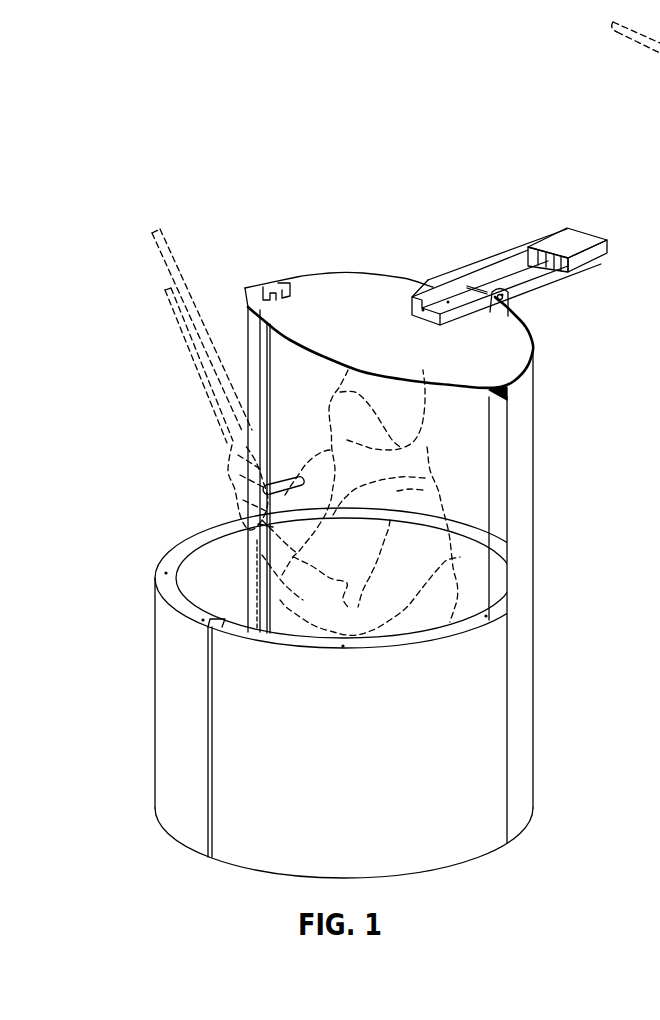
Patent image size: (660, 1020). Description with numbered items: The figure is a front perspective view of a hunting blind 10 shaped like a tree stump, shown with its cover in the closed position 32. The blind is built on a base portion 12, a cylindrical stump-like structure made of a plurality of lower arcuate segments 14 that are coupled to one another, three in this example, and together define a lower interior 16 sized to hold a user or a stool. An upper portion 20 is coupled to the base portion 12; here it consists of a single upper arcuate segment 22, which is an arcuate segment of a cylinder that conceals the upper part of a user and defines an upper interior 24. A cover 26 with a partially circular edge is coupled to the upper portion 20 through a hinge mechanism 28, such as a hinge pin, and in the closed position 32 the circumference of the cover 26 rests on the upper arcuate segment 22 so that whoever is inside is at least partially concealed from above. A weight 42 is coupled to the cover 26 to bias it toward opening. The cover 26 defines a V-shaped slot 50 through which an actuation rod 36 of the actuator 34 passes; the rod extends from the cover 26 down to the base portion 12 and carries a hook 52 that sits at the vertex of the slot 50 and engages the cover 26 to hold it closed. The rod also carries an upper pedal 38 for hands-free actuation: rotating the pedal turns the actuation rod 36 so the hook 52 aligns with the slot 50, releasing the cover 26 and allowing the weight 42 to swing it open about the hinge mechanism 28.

The hunting blind 10 is at (323, 193).
The base portion 12 is at (443, 812).
The lower arcuate segments 14 is at (243, 780).
The lower interior 16 is at (190, 557).
The upper portion 20 is at (522, 409).
The upper arcuate segment 22 is at (522, 466).
The upper interior 24 is at (460, 476).
The cover 26 is at (477, 360).
The hinge mechanism 28 is at (503, 296).
The closed position 32 is at (371, 257).
The actuator 34 is at (250, 440).
The actuation rod 36 is at (267, 371).
The upper pedal 38 is at (268, 498).
The weight 42 is at (572, 238).
The slot 50 is at (288, 287).
The hook 52 is at (277, 287).